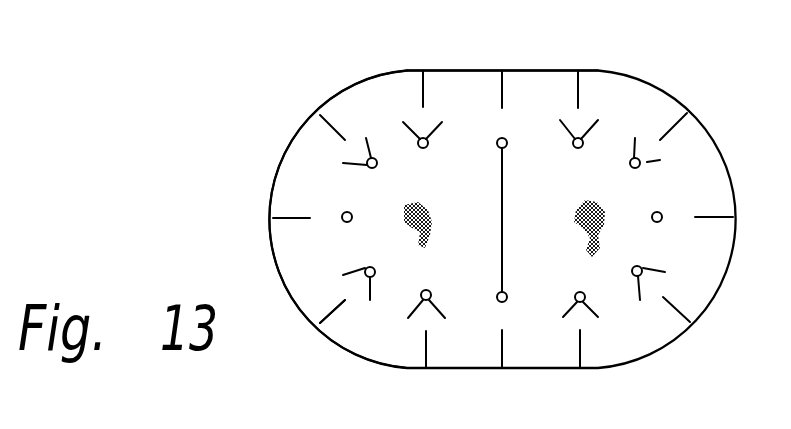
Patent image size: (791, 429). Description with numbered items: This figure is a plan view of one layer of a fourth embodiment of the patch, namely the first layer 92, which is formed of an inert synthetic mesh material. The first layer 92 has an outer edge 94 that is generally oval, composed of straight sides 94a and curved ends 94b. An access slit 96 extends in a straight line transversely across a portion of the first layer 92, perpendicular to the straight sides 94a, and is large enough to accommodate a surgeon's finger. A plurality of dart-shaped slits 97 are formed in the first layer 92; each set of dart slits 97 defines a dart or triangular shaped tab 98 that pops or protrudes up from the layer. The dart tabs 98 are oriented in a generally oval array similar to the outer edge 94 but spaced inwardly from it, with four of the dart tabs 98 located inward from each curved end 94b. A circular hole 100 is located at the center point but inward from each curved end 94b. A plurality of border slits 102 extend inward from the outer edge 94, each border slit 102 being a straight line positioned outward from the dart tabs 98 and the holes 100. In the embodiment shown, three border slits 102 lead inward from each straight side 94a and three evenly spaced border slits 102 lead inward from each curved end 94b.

The first layer 92 is at (456, 113).
The outer edge 94 is at (353, 88).
The straight sides 94a is at (509, 70).
The curved ends 94b is at (273, 236).
The access slit 96 is at (503, 167).
The dart-shaped slits 97 is at (596, 128).
The dart tab 98 is at (655, 155).
The circular hole 100 is at (341, 213).
The border slits 102 is at (330, 314).